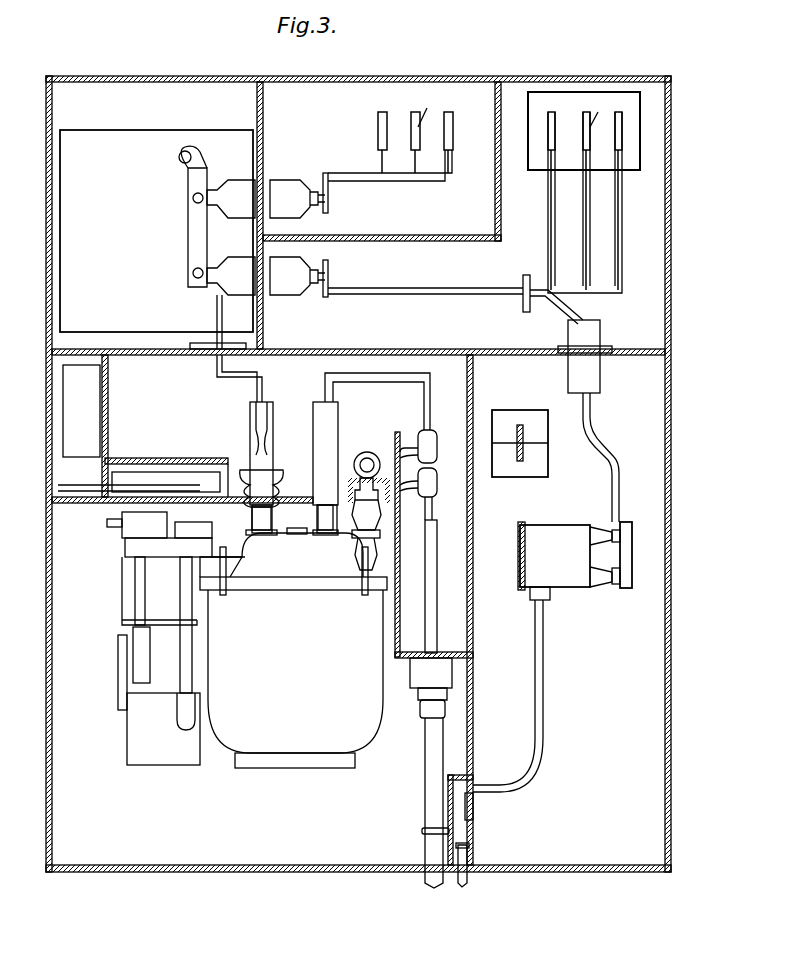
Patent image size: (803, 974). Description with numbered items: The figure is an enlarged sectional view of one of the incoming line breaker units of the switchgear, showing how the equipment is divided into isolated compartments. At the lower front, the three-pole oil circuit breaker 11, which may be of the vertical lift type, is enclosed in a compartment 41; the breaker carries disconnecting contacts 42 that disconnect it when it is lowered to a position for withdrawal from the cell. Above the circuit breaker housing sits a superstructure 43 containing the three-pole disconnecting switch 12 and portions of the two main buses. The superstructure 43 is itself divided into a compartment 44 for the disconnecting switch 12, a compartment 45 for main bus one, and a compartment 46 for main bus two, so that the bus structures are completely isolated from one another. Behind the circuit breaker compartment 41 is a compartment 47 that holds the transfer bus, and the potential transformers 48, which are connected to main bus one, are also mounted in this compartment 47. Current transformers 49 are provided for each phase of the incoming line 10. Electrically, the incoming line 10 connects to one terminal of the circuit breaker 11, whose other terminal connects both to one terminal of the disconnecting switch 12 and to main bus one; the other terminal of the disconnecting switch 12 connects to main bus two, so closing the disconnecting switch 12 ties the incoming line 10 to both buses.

The incoming line 10 is at (488, 935).
The three-pole oil circuit breaker 11 is at (308, 706).
The three-pole disconnecting switch 12 is at (194, 243).
The compartment 41 is at (165, 855).
The disconnecting contacts 42 is at (255, 447).
The superstructure 43 is at (186, 67).
The compartment 44 is at (236, 90).
The compartment 45 is at (652, 202).
The compartment 46 is at (340, 103).
The compartment 47 is at (647, 623).
The potential transformers 48 is at (560, 518).
The current transformers 49 is at (437, 480).